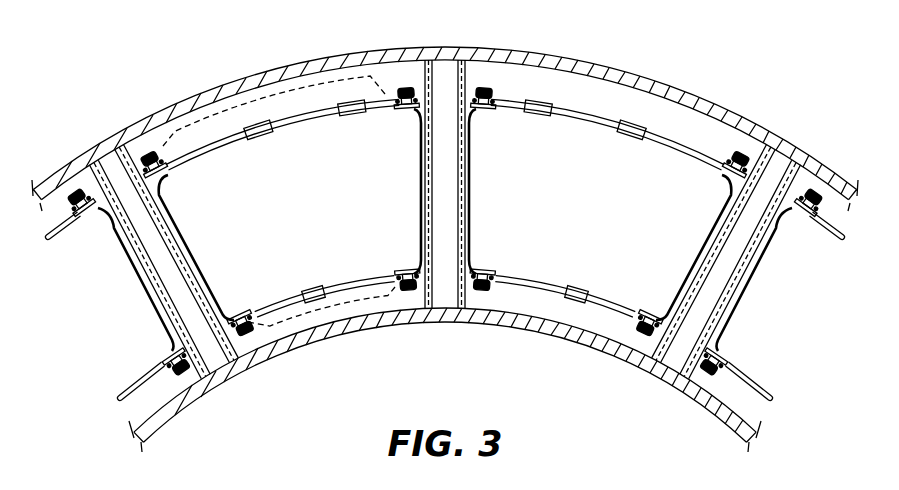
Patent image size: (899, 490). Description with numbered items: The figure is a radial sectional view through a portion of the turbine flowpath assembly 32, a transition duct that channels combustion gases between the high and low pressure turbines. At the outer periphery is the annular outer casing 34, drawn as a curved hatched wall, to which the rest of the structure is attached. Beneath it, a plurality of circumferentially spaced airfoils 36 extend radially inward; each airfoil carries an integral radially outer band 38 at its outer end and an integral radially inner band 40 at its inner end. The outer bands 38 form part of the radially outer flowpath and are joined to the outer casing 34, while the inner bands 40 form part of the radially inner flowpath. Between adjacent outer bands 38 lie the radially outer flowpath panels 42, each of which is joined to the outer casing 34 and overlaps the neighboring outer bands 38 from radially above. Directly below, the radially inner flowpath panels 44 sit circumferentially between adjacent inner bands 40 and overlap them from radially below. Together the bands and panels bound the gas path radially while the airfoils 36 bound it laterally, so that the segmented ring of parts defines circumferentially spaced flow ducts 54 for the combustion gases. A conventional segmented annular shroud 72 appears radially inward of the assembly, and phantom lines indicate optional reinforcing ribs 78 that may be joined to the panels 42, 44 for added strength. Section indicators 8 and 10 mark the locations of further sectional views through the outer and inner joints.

The turbine flowpath assembly 32 is at (662, 80).
The annular outer casing 34 is at (544, 57).
The airfoils 36 is at (468, 190).
The radially outer band 38 is at (172, 178).
The radially inner band 40 is at (240, 311).
The radially outer flowpath panels 42 is at (266, 131).
The radially inner flowpath panels 44 is at (281, 294).
The flow ducts 54 is at (291, 222).
The annular shroud 72 is at (344, 320).
The reinforcing ribs 78 is at (258, 98).
The section line 8 is at (464, 90).
The section line 10 is at (466, 289).